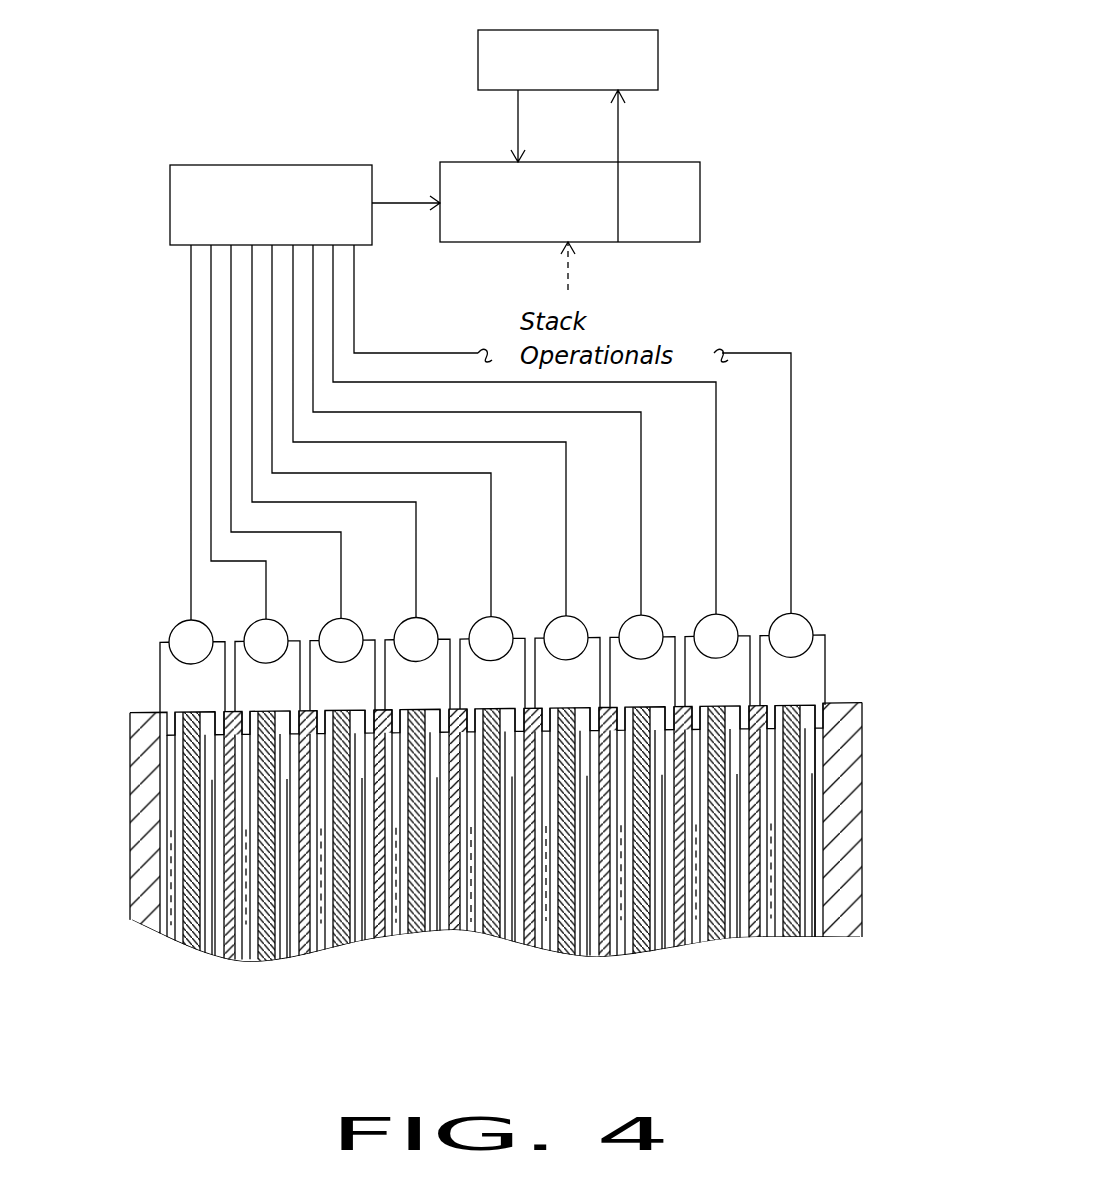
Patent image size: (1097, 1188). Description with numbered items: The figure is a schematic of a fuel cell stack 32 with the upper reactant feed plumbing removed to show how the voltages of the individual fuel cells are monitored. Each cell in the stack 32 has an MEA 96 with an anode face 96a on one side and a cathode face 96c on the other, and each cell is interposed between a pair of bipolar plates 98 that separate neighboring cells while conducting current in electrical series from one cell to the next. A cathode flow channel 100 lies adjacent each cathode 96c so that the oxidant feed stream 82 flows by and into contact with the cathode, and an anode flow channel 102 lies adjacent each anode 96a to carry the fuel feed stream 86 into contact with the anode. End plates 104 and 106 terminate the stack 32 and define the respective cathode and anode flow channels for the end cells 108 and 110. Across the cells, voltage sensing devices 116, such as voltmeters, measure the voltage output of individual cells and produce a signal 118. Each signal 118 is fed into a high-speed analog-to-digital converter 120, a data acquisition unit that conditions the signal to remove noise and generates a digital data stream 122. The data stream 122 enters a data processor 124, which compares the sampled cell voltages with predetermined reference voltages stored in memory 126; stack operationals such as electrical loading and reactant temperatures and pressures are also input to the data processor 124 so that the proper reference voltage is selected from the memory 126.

The fuel cell stack 32 is at (513, 865).
The oxidant feed stream 82 is at (608, 933).
The fuel feed stream 86 is at (403, 933).
The MEA 96 is at (822, 948).
The anode face 96a is at (777, 905).
The cathode face 96c is at (828, 744).
The bipolar plate 98 is at (377, 940).
The cathode flow channel 100 is at (818, 877).
The anode flow channel 102 is at (542, 938).
The end plate 104 is at (848, 788).
The end plate 106 is at (148, 858).
The end cell 108 is at (832, 918).
The end cell 110 is at (164, 772).
The voltage sensing device 116 is at (176, 627).
The signal 118 is at (272, 388).
The analog-to-digital converter 120 is at (272, 172).
The digital data stream 122 is at (398, 203).
The data processor 124 is at (700, 200).
The memory 126 is at (655, 50).